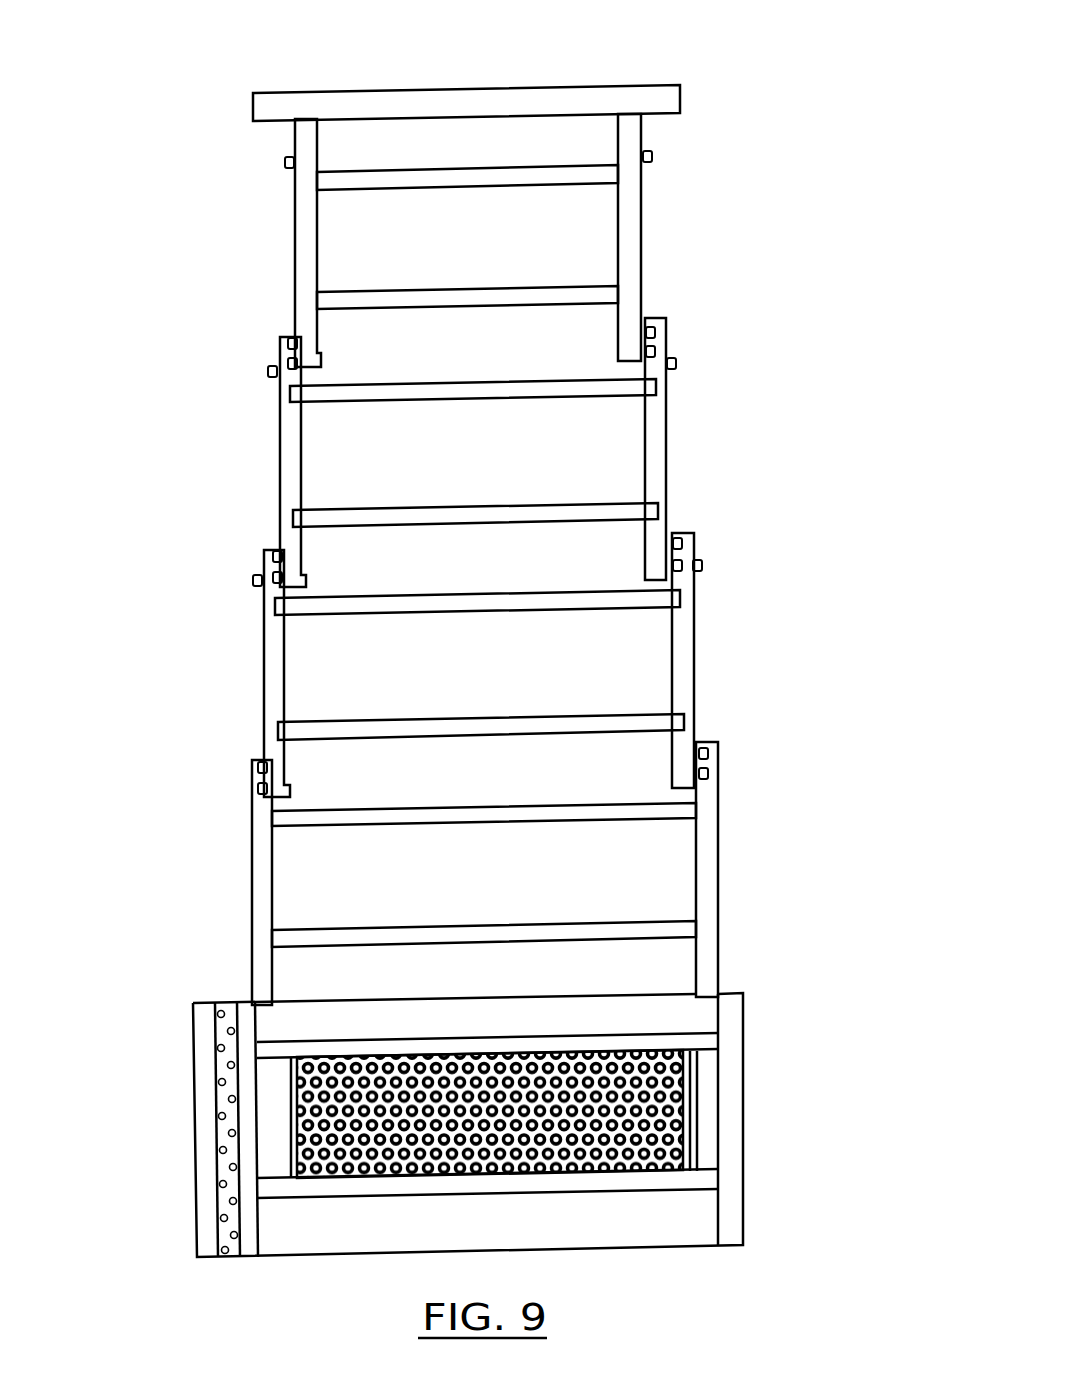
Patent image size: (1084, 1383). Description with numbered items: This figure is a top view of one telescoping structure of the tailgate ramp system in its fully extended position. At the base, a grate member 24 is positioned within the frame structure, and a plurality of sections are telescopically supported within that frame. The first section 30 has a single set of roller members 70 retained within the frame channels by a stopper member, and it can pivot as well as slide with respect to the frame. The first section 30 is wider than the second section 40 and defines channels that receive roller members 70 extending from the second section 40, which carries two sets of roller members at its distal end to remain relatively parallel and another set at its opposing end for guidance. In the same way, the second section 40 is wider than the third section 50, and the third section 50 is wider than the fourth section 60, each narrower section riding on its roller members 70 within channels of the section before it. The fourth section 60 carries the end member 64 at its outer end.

The grate member 24 is at (300, 1126).
The first section 30 is at (720, 920).
The second section 40 is at (694, 670).
The third section 50 is at (667, 449).
The fourth section 60 is at (642, 238).
The end member 64 is at (459, 88).
The roller member 70 is at (285, 163).